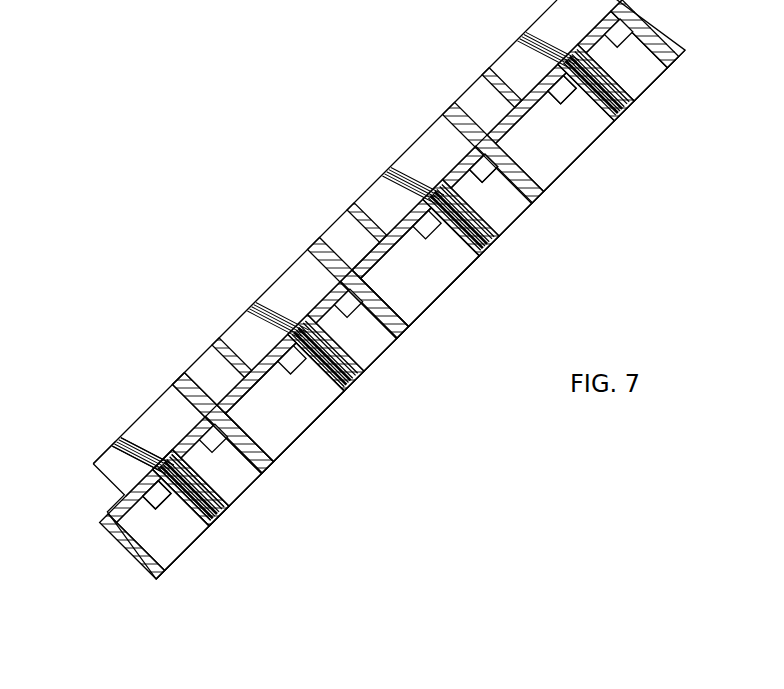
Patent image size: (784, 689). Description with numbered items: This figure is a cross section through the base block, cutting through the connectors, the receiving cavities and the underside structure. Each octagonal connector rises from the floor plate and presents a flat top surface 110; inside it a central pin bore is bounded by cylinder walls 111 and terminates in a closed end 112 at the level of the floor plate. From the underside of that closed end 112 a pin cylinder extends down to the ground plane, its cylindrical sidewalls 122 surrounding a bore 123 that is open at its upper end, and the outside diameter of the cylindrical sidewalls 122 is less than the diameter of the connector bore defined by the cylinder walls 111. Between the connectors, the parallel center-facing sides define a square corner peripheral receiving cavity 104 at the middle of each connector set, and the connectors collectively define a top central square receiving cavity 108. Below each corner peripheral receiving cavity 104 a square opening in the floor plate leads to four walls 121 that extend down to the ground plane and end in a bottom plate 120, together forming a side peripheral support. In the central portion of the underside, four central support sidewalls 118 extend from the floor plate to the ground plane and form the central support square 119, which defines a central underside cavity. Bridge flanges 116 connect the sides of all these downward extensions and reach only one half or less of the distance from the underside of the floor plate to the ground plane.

The corner peripheral receiving cavity 104 is at (193, 380).
The top central square receiving cavity 108 is at (357, 255).
The top surface 110 is at (103, 452).
The cylinder walls 111 is at (141, 432).
The closed end 112 is at (164, 452).
The bridge flanges 116 is at (157, 503).
The central support sidewalls 118 is at (423, 275).
The central support square 119 is at (365, 283).
The bottom plate 120 is at (278, 445).
The walls 121 is at (277, 413).
The cylindrical sidewalls 122 is at (203, 523).
The bore 123 is at (218, 512).